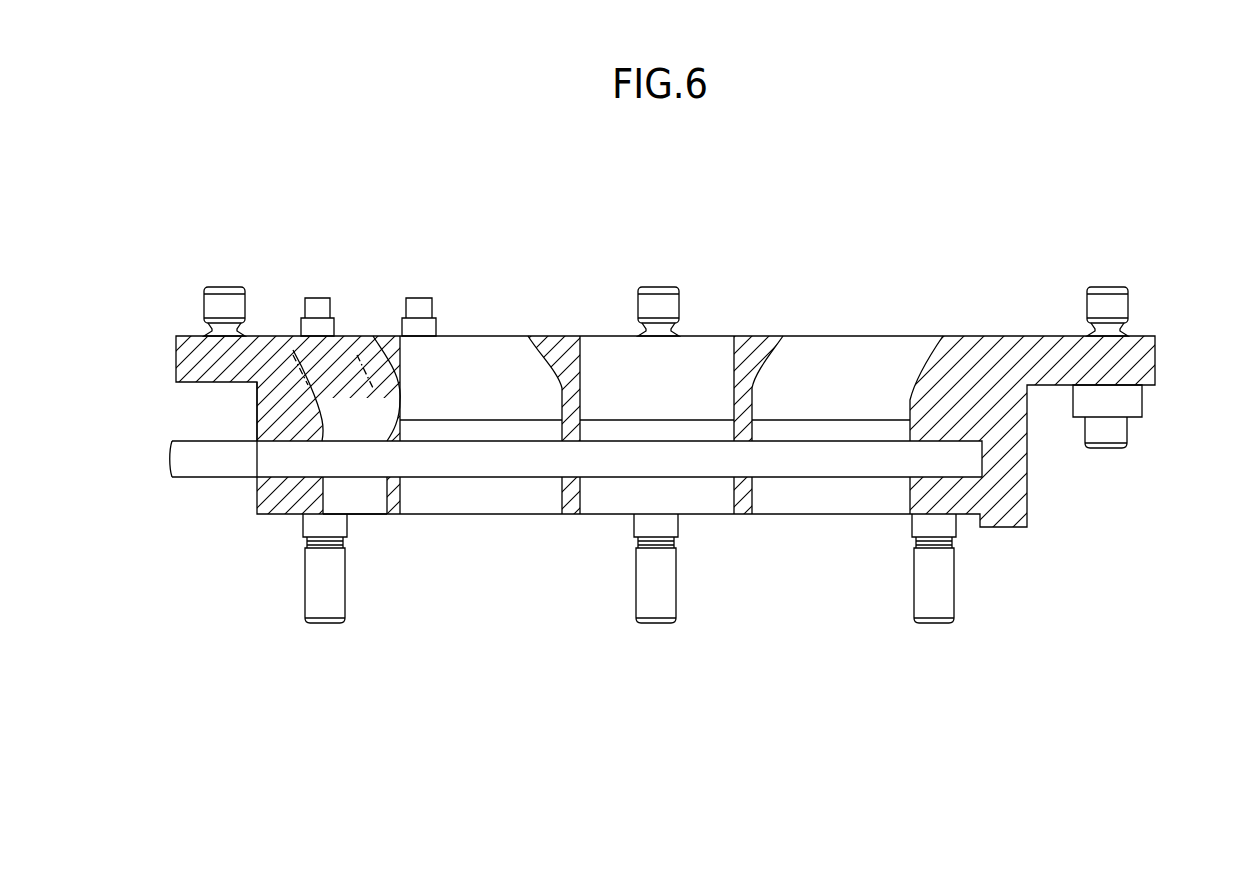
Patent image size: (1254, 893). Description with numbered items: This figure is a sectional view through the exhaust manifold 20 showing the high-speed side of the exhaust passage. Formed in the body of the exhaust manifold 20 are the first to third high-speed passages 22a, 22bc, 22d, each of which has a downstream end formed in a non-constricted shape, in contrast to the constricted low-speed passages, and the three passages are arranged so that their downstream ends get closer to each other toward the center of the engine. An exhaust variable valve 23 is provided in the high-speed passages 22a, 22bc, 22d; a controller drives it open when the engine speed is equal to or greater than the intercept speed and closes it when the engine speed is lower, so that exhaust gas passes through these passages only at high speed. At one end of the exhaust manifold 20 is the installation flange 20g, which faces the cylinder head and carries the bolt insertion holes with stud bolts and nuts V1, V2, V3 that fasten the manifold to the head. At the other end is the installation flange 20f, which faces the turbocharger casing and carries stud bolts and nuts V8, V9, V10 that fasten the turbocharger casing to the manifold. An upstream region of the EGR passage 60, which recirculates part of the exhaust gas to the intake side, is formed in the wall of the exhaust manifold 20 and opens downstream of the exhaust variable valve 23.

The exhaust manifold 20 is at (1002, 358).
The installation flange 20f is at (1015, 505).
The installation flange 20g is at (1140, 361).
The first high-speed passage 22a is at (480, 368).
The second high-speed passage 22bc is at (695, 383).
The third high-speed passage 22d is at (823, 358).
The exhaust variable valve 23 is at (418, 432).
The EGR passage 60 is at (352, 514).
The first stud bolt and nut V1 is at (1105, 290).
The second stud bolt and nut V2 is at (648, 287).
The third stud bolt and nut V3 is at (223, 287).
The eighth stud bolt and nut V8 is at (323, 608).
The ninth stud bolt and nut V9 is at (652, 608).
The tenth stud bolt and nut V10 is at (932, 608).